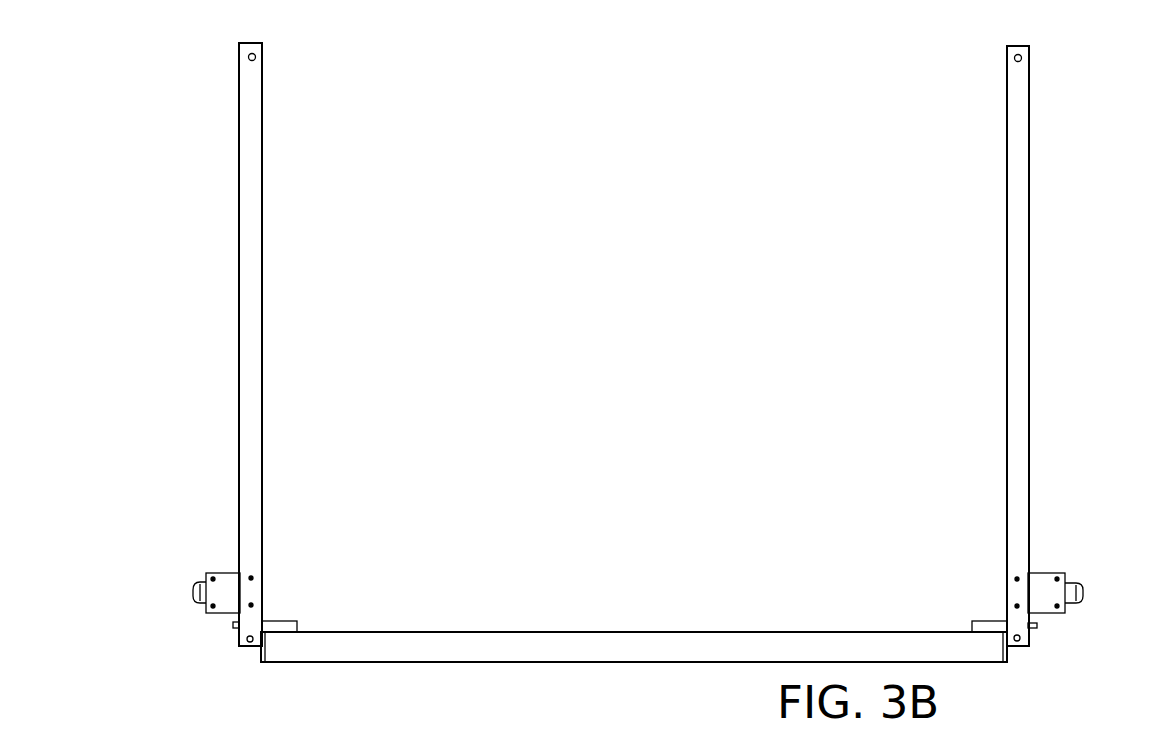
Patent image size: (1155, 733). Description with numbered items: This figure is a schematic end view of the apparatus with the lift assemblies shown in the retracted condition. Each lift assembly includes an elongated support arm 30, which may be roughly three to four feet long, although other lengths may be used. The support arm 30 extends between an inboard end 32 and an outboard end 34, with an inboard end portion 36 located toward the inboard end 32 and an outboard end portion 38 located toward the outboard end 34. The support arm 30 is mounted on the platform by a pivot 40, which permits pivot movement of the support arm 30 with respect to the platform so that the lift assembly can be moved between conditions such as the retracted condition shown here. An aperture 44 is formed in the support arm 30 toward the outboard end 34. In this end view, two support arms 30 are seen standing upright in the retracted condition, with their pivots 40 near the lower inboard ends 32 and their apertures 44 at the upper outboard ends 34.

The support arm 30 is at (263, 380).
The inboard end 32 is at (250, 648).
The outboard end 34 is at (263, 58).
The inboard end portion 36 is at (263, 590).
The outboard end portion 38 is at (264, 104).
The pivot 40 is at (233, 625).
The aperture 44 is at (250, 56).